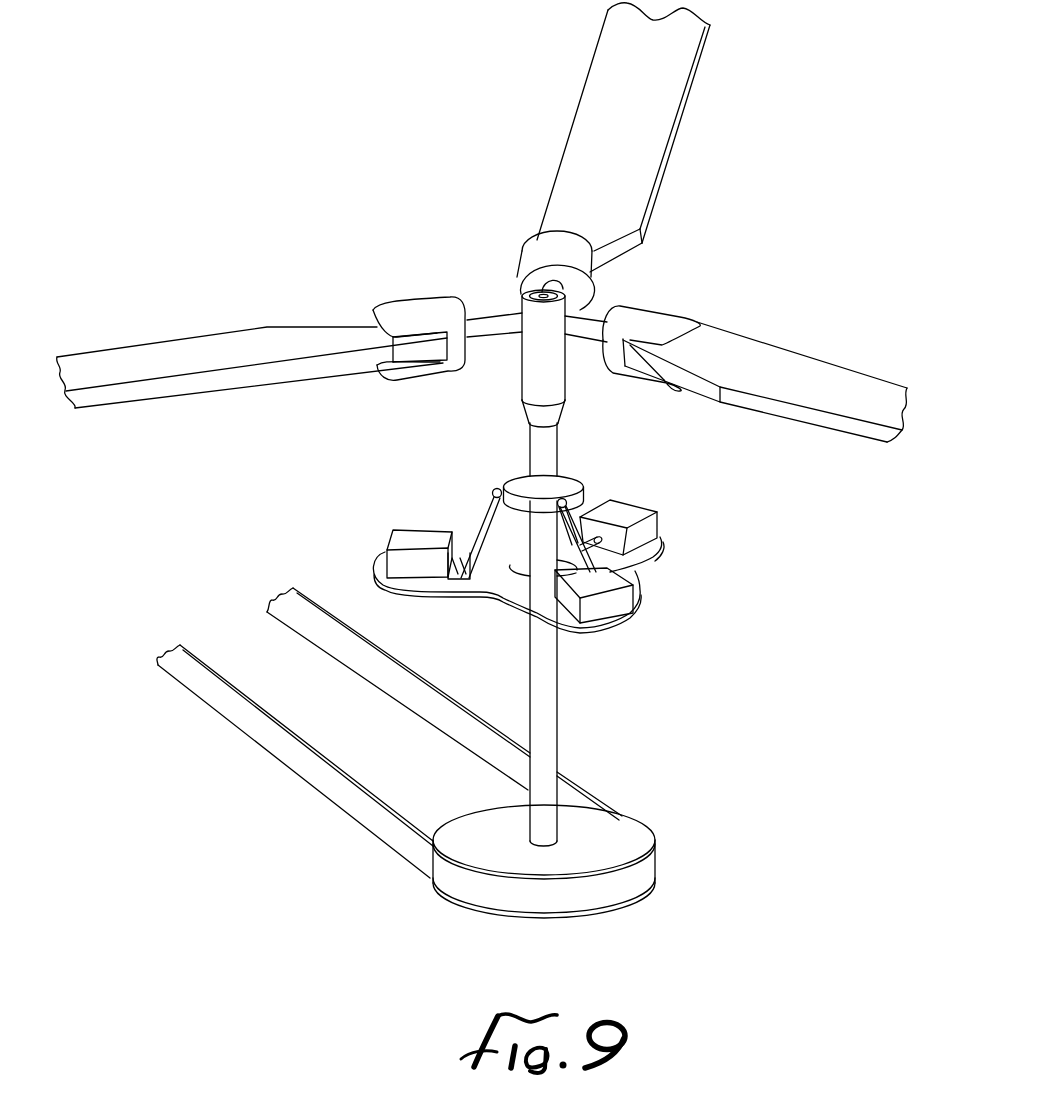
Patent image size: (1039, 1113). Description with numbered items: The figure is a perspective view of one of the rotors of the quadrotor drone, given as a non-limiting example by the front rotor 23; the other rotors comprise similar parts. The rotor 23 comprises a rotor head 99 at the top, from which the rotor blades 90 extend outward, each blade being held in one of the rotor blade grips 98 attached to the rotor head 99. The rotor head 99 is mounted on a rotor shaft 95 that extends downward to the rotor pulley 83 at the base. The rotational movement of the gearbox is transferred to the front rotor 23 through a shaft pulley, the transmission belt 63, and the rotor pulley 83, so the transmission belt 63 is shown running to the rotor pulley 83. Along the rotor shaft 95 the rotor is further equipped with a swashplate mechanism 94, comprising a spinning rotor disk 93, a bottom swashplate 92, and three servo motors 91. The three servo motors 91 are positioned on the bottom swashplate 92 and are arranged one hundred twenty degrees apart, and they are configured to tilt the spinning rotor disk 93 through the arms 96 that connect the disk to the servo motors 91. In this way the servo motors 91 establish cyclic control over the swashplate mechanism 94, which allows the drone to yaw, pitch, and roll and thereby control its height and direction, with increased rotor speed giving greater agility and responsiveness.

The front rotor 23 is at (729, 220).
The rotor blades 90 is at (613, 107).
The rotor blade grips 98 is at (540, 250).
The rotor head 99 is at (540, 372).
The spinning rotor disk 93 is at (565, 483).
The arms 96 is at (483, 503).
The bottom swashplate 92 is at (497, 567).
The servo motors 91 is at (620, 515).
The swashplate mechanism 94 is at (672, 592).
The rotor shaft 95 is at (540, 703).
The rotor pulley 83 is at (615, 840).
The transmission belt 63 is at (297, 760).